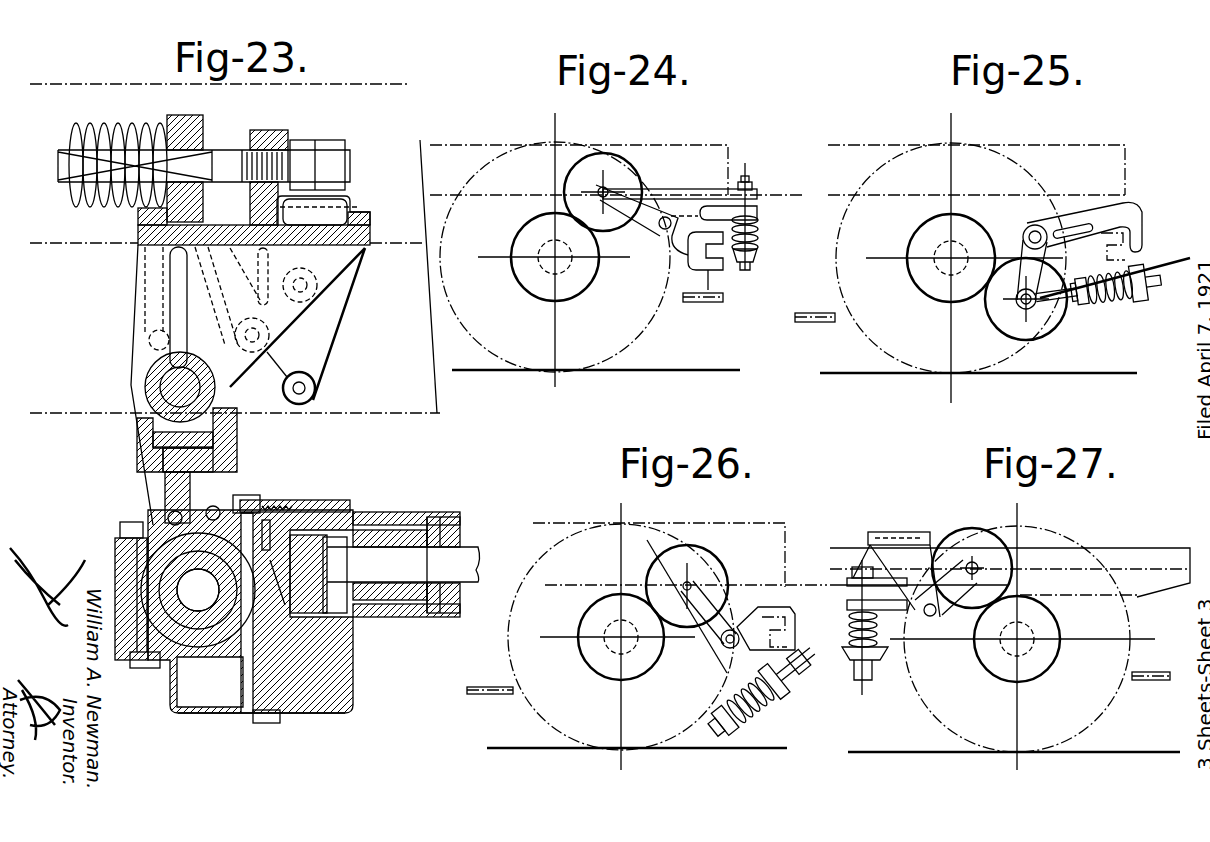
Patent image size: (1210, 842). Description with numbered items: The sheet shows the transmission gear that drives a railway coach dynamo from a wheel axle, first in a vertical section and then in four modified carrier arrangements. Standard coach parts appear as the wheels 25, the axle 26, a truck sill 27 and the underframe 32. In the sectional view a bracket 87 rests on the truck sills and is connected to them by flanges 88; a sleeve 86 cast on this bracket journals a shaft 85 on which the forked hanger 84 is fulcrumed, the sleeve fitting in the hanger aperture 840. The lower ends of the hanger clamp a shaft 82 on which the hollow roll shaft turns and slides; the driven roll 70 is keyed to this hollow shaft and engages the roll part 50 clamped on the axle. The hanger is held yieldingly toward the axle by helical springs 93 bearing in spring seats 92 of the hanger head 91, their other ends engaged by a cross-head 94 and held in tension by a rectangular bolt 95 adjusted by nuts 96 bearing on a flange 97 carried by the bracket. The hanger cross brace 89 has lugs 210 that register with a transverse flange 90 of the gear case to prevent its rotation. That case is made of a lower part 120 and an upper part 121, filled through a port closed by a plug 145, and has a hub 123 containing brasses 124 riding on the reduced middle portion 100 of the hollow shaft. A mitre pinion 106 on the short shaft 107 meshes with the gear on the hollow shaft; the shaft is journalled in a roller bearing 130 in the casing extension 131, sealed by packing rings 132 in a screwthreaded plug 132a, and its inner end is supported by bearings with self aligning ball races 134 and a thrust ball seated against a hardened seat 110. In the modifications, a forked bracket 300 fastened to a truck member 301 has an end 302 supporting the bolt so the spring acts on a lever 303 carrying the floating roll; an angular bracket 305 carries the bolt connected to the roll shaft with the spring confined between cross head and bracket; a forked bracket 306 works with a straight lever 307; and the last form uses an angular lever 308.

In FIG. 23, the underframe of a car 32 is at (362, 88).
In FIG. 23, the helical springs 93 is at (93, 122).
In FIG. 24, the helical springs 93 is at (765, 237).
In FIG. 25, the helical springs 93 is at (1110, 303).
In FIG. 26, the helical springs 93 is at (757, 712).
In FIG. 27, the helical springs 93 is at (850, 610).
In FIG. 23, the head of the hanger 91 is at (200, 120).
In FIG. 23, the spring seats 92 is at (208, 136).
In FIG. 23, the bolt 95 is at (58, 173).
In FIG. 24, the bolt 95 is at (765, 207).
In FIG. 25, the bolt 95 is at (1065, 303).
In FIG. 26, the bolt 95 is at (778, 695).
In FIG. 27, the bolt 95 is at (850, 580).
In FIG. 23, the nuts 96 is at (300, 172).
In FIG. 23, the flange 97 is at (303, 197).
In FIG. 23, the flanges 88 is at (318, 348).
In FIG. 23, the bracket 87 is at (220, 297).
In FIG. 23, the sleeve 86 is at (160, 367).
In FIG. 23, the aperture 840 is at (140, 368).
In FIG. 23, the forked hanger 84 is at (135, 400).
In FIG. 23, the shaft 85 is at (210, 390).
In FIG. 23, the cross brace 89 is at (235, 440).
In FIG. 23, the flanges or lugs 210 is at (235, 463).
In FIG. 23, the transverse flange 90 is at (183, 462).
In FIG. 23, the self aligning ball races 134 is at (350, 523).
In FIG. 23, the plug 145 is at (293, 510).
In FIG. 23, the upper casing part 121 is at (350, 517).
In FIG. 23, the extension of the casing 131 is at (413, 618).
In FIG. 23, the screwthreaded plug 132a is at (453, 530).
In FIG. 23, the short shaft 107 is at (462, 562).
In FIG. 23, the packing rings 132 is at (460, 592).
In FIG. 23, the roller bearing 130 is at (418, 618).
In FIG. 23, the mitre pinion 106 is at (340, 630).
In FIG. 23, the hardened seat 110 is at (293, 627).
In FIG. 23, the hub 123 is at (173, 680).
In FIG. 23, the brasses 124 is at (253, 700).
In FIG. 23, the shaft 82 is at (200, 657).
In FIG. 23, the lower casing part 120 is at (300, 707).
In FIG. 23, the middle portion of the hollow shaft 100 is at (327, 680).
In FIG. 23, the truck sill 27 is at (400, 395).
In FIG. 24, the driven roll 70 is at (605, 165).
In FIG. 25, the driven roll 70 is at (1005, 320).
In FIG. 26, the driven roll 70 is at (660, 570).
In FIG. 27, the driven roll 70 is at (962, 535).
In FIG. 24, the lever 303 is at (668, 215).
In FIG. 24, the end of the fork 302 is at (757, 190).
In FIG. 24, the roll part 50 is at (520, 240).
In FIG. 25, the roll part 50 is at (925, 290).
In FIG. 26, the roll part 50 is at (595, 617).
In FIG. 27, the roll part 50 is at (1040, 668).
In FIG. 24, the axle 26 is at (560, 265).
In FIG. 25, the axle 26 is at (942, 254).
In FIG. 26, the axle 26 is at (607, 643).
In FIG. 27, the axle 26 is at (1030, 648).
In FIG. 24, the bracket 300 is at (676, 258).
In FIG. 24, the member of the truck 301 is at (723, 260).
In FIG. 25, the member of the truck 301 is at (1128, 234).
In FIG. 26, the member of the truck 301 is at (793, 620).
In FIG. 24, the wheels 25 is at (598, 345).
In FIG. 25, the wheels 25 is at (925, 345).
In FIG. 26, the wheels 25 is at (660, 730).
In FIG. 27, the wheels 25 is at (985, 725).
In FIG. 25, the bracket 305 is at (1125, 215).
In FIG. 26, the straight lever 307 is at (738, 585).
In FIG. 26, the forked bracket 306 is at (725, 668).
In FIG. 27, the angular lever 308 is at (917, 630).
In FIG. 24, the cross-head 94 is at (762, 256).
In FIG. 25, the cross-head 94 is at (1097, 312).
In FIG. 26, the cross-head 94 is at (727, 742).
In FIG. 27, the cross-head 94 is at (880, 660).